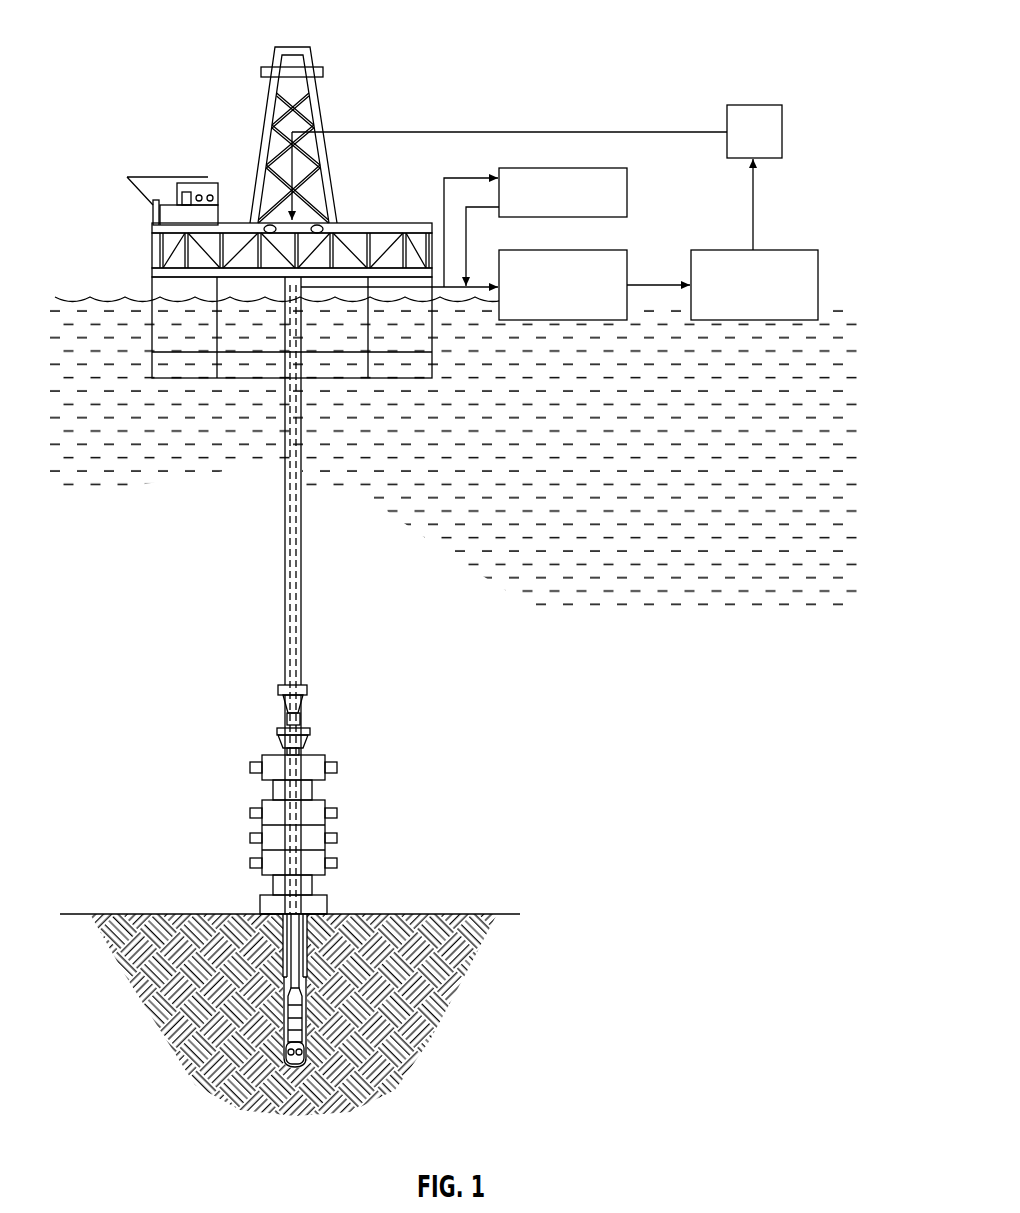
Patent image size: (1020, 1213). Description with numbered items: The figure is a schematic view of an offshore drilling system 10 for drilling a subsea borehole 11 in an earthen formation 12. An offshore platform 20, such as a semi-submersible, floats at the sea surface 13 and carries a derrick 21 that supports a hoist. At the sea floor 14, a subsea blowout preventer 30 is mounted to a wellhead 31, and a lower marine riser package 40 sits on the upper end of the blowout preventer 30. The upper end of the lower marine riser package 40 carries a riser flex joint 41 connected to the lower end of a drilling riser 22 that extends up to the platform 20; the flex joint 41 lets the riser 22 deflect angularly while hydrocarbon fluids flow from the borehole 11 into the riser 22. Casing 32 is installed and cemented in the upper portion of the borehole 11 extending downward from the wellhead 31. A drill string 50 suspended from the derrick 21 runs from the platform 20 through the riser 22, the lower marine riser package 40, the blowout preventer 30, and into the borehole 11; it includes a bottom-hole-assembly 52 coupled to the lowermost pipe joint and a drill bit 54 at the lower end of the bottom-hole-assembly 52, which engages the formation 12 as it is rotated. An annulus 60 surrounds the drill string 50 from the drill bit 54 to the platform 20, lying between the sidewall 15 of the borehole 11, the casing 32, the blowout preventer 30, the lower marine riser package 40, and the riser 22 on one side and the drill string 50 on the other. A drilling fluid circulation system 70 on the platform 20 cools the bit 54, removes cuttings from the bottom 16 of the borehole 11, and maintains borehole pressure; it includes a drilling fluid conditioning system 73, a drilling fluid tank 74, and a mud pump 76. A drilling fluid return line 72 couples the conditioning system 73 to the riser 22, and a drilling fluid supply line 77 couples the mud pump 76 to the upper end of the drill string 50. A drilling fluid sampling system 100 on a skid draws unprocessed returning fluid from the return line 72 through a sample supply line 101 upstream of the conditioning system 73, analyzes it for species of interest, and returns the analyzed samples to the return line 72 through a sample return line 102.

The offshore drilling system 10 is at (552, 38).
The subsea borehole 11 is at (316, 972).
The earthen formation 12 is at (422, 1017).
The sea surface 13 is at (105, 300).
The sea floor 14 is at (152, 914).
The sidewall 15 is at (297, 983).
The bottom 16 is at (303, 1114).
The offshore platform 20 is at (155, 255).
The derrick 21 is at (320, 110).
The drilling riser 22 is at (302, 610).
The subsea blowout preventer 30 is at (231, 795).
The wellhead 31 is at (327, 898).
The casing 32 is at (260, 914).
The lower marine riser package 40 is at (262, 758).
The riser flex joint 41 is at (302, 720).
The drill string 50 is at (302, 497).
The bottom-hole-assembly 52 is at (290, 1022).
The drill bit 54 is at (298, 1058).
The annulus 60 is at (302, 570).
The drilling fluid circulation system 70 is at (684, 374).
The drilling fluid return line 72 is at (387, 289).
The drilling fluid conditioning system 73 is at (610, 250).
The drilling fluid tank 74 is at (785, 250).
The mud pump 76 is at (768, 105).
The drilling fluid supply line 77 is at (498, 132).
The drilling fluid sampling system 100 is at (610, 168).
The sample supply line 101 is at (440, 180).
The sample return line 102 is at (458, 212).